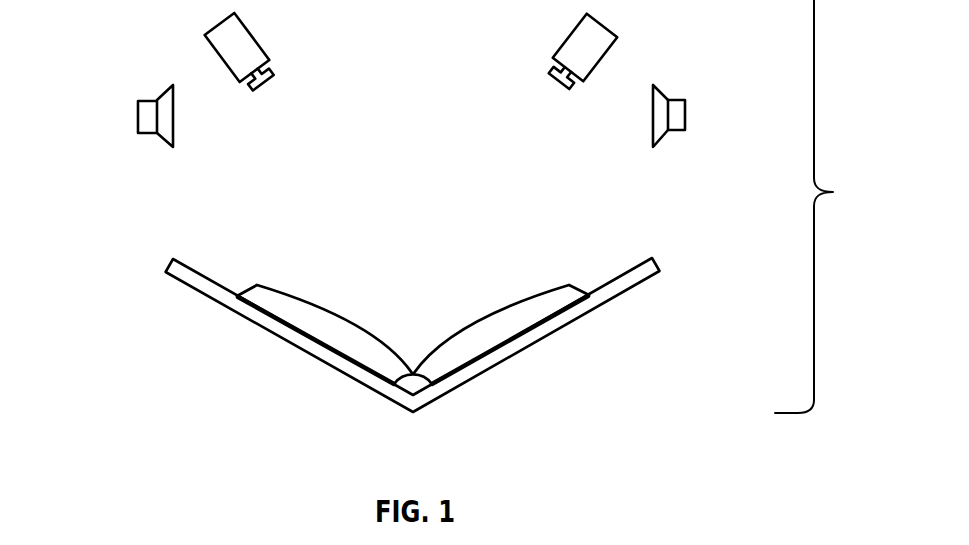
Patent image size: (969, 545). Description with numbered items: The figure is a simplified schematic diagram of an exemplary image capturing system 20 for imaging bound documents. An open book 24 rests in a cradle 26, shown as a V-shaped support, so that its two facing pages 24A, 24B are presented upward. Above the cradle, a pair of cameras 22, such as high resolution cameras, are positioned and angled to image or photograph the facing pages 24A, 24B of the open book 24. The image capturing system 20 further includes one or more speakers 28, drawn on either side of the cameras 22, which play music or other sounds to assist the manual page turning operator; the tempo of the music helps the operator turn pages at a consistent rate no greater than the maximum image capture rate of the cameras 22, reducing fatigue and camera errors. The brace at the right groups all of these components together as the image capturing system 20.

The image capturing system 20 is at (829, 206).
The cameras 22 is at (608, 23).
The book 24 is at (419, 293).
The facing page 24A is at (325, 300).
The facing page 24B is at (497, 300).
The cradle 26 is at (660, 265).
The speakers 28 is at (138, 118).